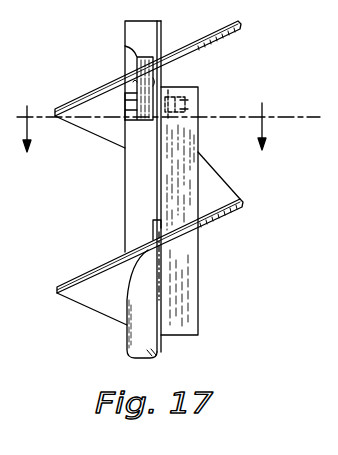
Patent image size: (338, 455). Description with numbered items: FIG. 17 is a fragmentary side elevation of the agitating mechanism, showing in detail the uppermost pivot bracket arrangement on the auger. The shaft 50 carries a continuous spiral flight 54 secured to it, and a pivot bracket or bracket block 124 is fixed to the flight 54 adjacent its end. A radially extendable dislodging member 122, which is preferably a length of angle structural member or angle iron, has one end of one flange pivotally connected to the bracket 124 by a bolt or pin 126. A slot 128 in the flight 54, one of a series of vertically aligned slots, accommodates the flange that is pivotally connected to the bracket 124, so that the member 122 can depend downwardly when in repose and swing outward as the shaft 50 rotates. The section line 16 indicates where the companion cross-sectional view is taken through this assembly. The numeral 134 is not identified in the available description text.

The section line 16- 16 is at (168, 122).
The shaft 50 is at (130, 179).
The spiral flight 54 is at (93, 268).
The radially extendable dislodging member 122 is at (190, 171).
The pivot bracket 124 is at (134, 57).
The bolt 126 is at (186, 100).
The slot 128 is at (151, 229).
The reference numeral (adjacent figure) 134 is at (163, 448).